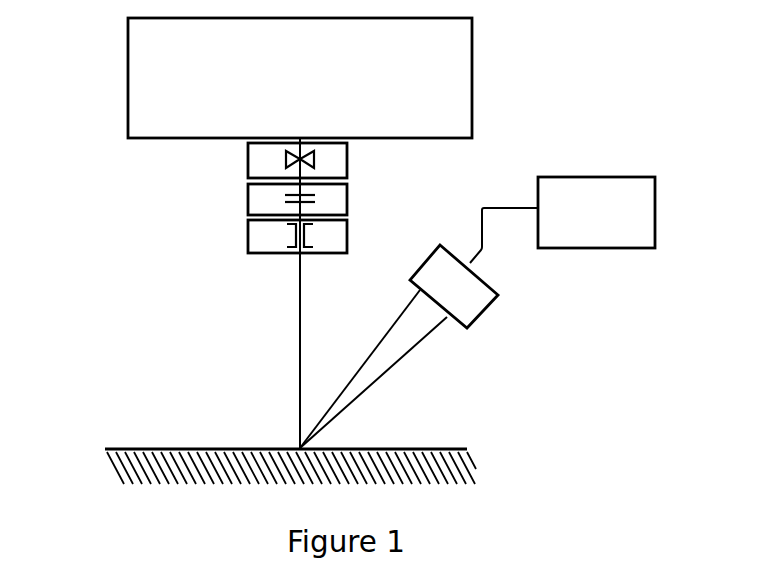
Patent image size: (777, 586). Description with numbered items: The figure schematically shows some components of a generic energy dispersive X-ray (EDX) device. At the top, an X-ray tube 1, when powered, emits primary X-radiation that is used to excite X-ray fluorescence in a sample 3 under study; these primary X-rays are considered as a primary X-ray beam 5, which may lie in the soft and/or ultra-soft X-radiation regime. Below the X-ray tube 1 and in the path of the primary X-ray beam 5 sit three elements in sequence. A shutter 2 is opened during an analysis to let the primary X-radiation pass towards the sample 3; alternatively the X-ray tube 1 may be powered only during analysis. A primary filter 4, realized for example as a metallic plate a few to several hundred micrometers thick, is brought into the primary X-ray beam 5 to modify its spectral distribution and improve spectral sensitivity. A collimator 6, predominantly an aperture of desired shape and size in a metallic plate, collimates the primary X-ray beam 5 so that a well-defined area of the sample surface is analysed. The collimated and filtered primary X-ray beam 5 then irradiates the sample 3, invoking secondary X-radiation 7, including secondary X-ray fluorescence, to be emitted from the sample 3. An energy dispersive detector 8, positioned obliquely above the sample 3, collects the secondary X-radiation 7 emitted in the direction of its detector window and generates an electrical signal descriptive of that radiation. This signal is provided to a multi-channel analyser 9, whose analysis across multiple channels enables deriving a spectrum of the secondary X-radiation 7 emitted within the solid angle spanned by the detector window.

The X-ray tube 1 is at (152, 125).
The shutter 2 is at (255, 163).
The sample 3 is at (112, 468).
The primary filter 4 is at (255, 199).
The primary X-ray beam 5 is at (300, 293).
The collimator 6 is at (255, 238).
The secondary X-radiation 7 is at (393, 355).
The energy dispersive detector 8 is at (465, 313).
The multi-channel analyser 9 is at (638, 238).